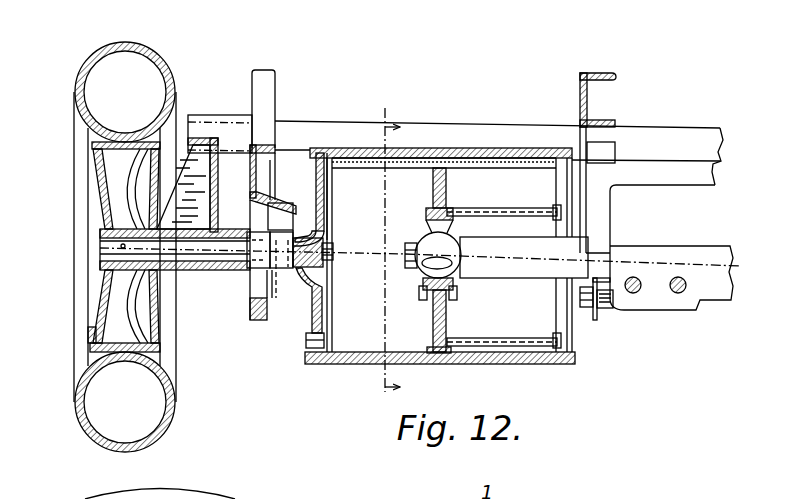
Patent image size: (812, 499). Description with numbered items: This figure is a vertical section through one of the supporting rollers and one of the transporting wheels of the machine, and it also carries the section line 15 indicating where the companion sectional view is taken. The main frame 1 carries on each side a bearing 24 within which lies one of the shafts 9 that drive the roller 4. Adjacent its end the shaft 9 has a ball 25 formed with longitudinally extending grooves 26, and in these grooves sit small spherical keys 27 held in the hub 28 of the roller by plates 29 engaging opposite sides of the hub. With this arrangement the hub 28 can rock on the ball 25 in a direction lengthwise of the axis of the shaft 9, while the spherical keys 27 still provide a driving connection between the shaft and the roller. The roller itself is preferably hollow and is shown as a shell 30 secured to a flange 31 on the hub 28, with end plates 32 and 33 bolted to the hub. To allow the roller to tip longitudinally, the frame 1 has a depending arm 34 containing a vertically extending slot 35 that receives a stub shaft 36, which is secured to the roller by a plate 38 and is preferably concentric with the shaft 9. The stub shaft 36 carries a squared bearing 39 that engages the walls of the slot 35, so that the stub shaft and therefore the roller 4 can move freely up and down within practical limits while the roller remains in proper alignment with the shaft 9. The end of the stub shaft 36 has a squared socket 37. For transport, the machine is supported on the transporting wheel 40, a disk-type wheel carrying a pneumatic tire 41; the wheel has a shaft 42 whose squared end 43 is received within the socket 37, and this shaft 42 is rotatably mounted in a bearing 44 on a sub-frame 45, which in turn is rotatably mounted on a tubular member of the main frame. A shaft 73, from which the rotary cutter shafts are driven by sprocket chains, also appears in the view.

The main frame 1 is at (634, 133).
The roller 4 is at (485, 364).
The shaft 9 is at (499, 262).
The section line 15 is at (386, 249).
The bearing 24 is at (537, 272).
The ball 25 is at (414, 258).
The grooves 26 is at (426, 234).
The spherical keys 27 is at (450, 212).
The hub 28 is at (433, 210).
The plates 29 is at (454, 231).
The shell 30 is at (518, 160).
The flange 31 is at (437, 148).
The end plate 32 is at (545, 150).
The end plate 33 is at (328, 229).
The depending arm 34 is at (252, 326).
The slot 35 is at (270, 217).
The stub shaft 36 is at (247, 271).
The squared socket 37 is at (258, 272).
The plate 38 is at (325, 211).
The squared bearing 39 is at (250, 320).
The transporting wheel 40 is at (103, 193).
The pneumatic tire 41 is at (167, 62).
The wheel shaft 42 is at (168, 245).
The squared end 43 is at (246, 232).
The bearing 44 is at (192, 267).
The sub-frame 45 is at (197, 158).
The shaft 73 is at (605, 312).